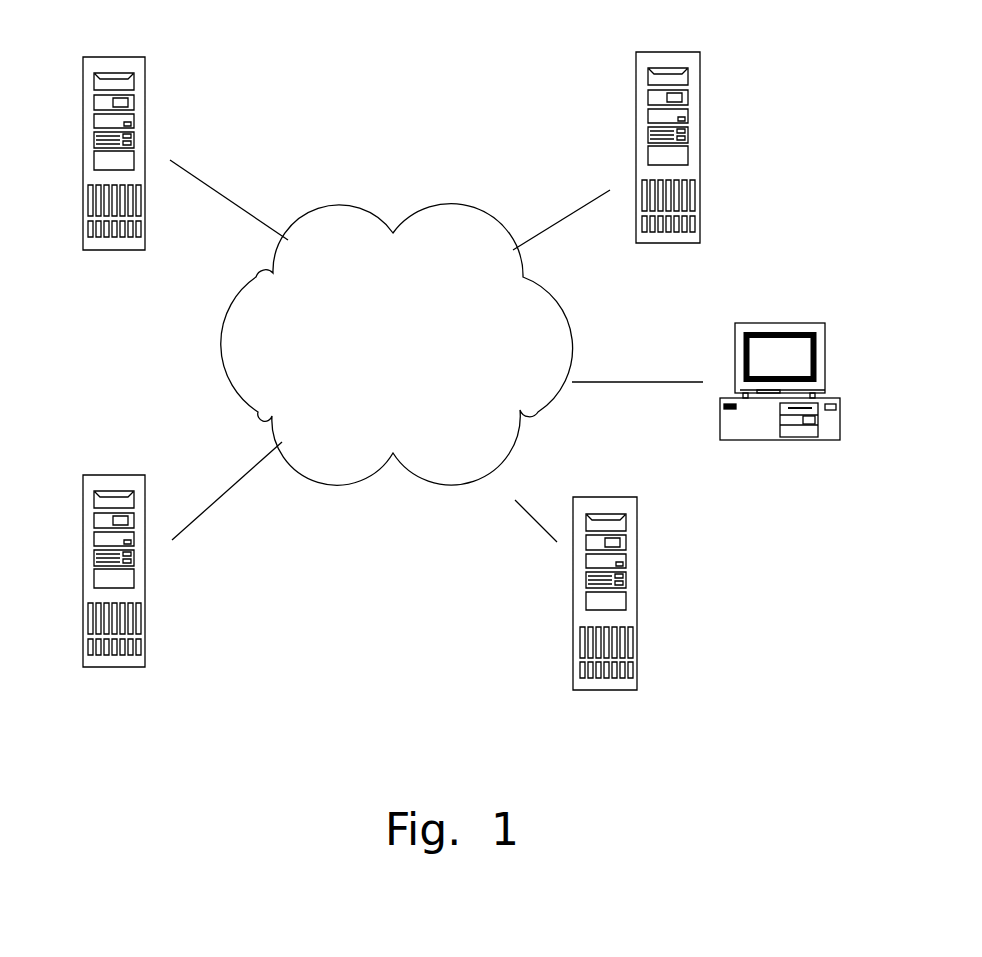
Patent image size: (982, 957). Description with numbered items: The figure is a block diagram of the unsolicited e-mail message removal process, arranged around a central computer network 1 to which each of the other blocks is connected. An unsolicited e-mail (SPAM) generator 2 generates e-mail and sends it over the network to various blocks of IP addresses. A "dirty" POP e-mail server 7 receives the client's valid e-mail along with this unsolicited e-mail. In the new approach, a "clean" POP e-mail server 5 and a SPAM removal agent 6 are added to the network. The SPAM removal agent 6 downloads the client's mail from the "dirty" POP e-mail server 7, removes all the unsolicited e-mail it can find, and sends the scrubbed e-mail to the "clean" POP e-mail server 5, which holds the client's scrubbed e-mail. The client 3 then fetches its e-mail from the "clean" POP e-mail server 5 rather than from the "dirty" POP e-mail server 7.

The computer network 1 is at (453, 235).
The unsolicited e-mail (SPAM) generator 2 is at (153, 102).
The client 3 is at (840, 353).
The clean POP e-mail server 5 is at (645, 543).
The SPAM removal agent 6 is at (153, 600).
The dirty POP e-mail server 7 is at (722, 102).